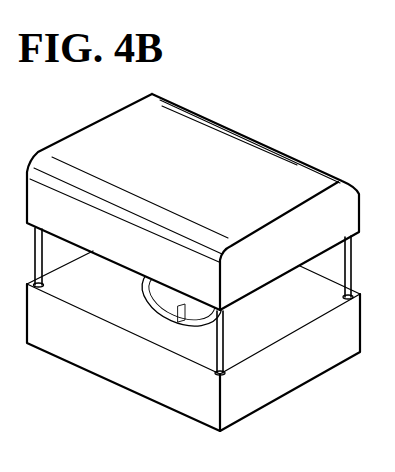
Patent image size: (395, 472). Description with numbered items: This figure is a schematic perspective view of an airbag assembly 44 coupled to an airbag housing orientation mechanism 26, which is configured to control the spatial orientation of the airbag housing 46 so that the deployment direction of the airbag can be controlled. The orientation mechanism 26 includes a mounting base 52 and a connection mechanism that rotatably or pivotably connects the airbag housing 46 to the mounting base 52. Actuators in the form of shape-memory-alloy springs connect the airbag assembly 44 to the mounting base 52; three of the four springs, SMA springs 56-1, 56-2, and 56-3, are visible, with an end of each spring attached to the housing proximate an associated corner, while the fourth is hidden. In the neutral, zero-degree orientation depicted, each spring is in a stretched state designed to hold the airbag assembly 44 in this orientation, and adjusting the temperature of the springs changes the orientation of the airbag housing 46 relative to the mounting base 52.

The airbag housing orientation mechanism 26 is at (198, 258).
The airbag assembly 44 is at (153, 92).
The airbag housing 46 is at (226, 158).
The mounting base 52 is at (128, 357).
The SMA spring 56-1 is at (42, 257).
The SMA spring 56-2 is at (223, 347).
The SMA spring 56-3 is at (345, 280).